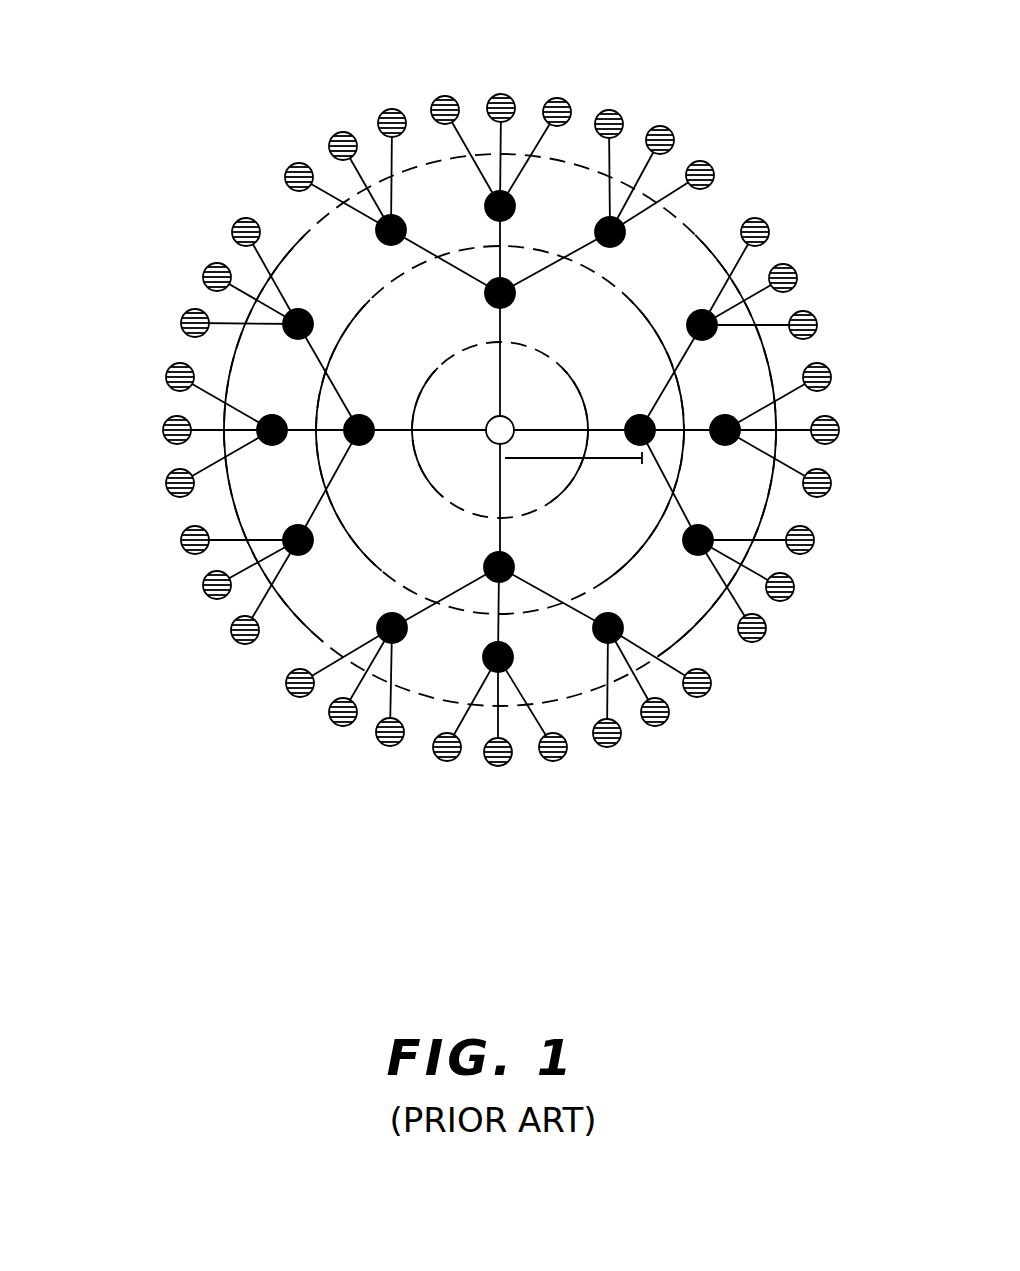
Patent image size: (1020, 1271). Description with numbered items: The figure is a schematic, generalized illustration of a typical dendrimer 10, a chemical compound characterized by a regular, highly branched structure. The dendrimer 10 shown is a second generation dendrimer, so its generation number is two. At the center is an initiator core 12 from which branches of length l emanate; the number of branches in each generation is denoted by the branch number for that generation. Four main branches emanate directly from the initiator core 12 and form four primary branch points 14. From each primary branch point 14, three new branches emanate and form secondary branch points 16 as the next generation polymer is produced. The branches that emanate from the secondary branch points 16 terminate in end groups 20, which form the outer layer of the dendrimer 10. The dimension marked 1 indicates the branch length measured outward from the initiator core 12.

The dendrimer 10 is at (99, 315).
The initiator core 12 is at (493, 444).
The primary branch points 14 is at (488, 298).
The secondary branch points 16 is at (486, 208).
The end groups 20 is at (443, 96).
The unit radius dimension 1 is at (573, 458).